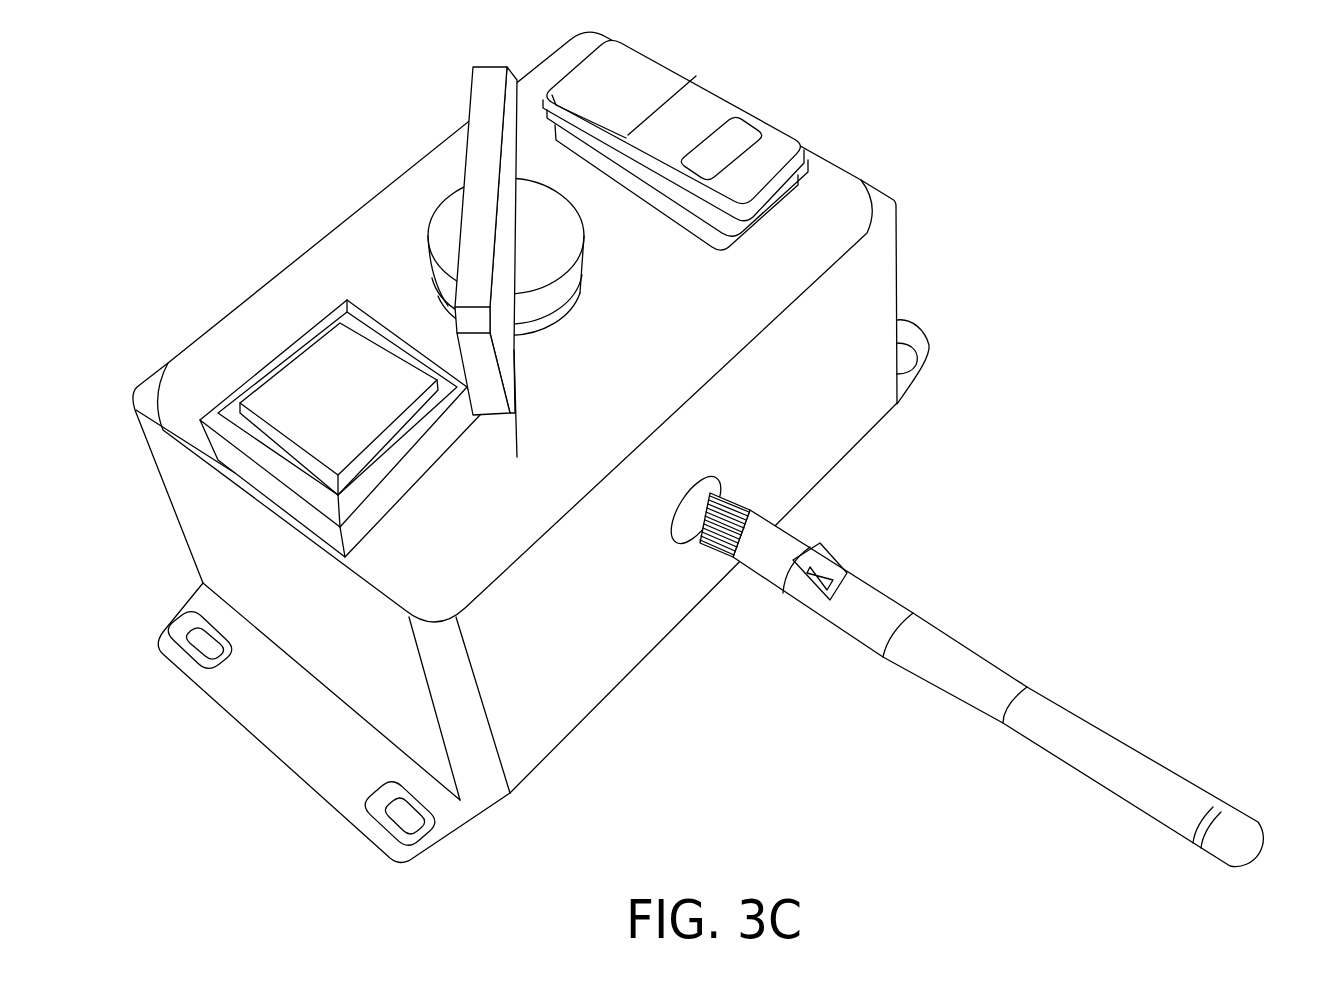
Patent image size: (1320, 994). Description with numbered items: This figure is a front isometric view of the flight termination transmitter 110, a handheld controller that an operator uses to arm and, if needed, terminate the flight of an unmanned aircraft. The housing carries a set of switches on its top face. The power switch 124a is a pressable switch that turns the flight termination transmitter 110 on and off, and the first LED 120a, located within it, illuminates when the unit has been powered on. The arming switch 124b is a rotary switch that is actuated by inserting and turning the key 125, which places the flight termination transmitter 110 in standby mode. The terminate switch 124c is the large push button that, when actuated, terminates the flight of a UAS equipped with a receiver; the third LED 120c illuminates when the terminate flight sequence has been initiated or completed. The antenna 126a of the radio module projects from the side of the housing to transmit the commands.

The flight termination transmitter 110 is at (917, 147).
The first LED 120a is at (740, 135).
The third LED 120c is at (297, 403).
The power switch 124a is at (653, 90).
The arming switch 124b is at (562, 323).
The terminate switch 124c is at (330, 358).
The key 125 is at (490, 137).
The antenna 126a is at (950, 652).